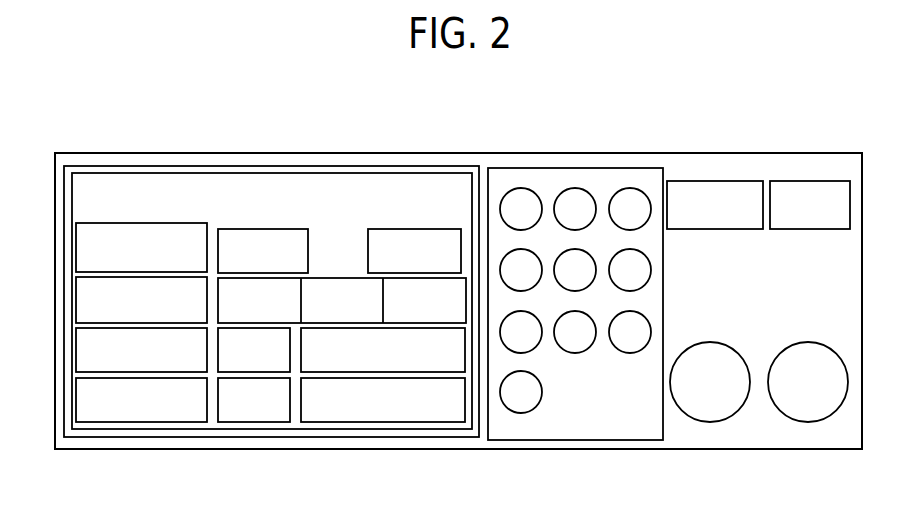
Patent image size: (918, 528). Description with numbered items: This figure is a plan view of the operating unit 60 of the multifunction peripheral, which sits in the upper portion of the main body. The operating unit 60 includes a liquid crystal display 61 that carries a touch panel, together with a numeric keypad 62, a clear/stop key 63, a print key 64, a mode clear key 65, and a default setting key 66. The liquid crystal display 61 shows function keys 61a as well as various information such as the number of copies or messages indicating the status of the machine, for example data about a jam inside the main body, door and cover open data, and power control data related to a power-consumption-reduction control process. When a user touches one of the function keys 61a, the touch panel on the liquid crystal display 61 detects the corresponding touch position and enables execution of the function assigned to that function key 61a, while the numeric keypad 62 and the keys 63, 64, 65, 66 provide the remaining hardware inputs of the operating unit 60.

The operating unit 60 is at (487, 153).
The liquid crystal display (liquid crystal touch panel) 61 is at (339, 437).
The function keys 61a is at (225, 428).
The numeric keypad 62 is at (583, 440).
The clear/stop key 63 is at (722, 342).
The print key 64 is at (812, 342).
The mode clear key 65 is at (838, 230).
The default setting key 66 is at (748, 230).